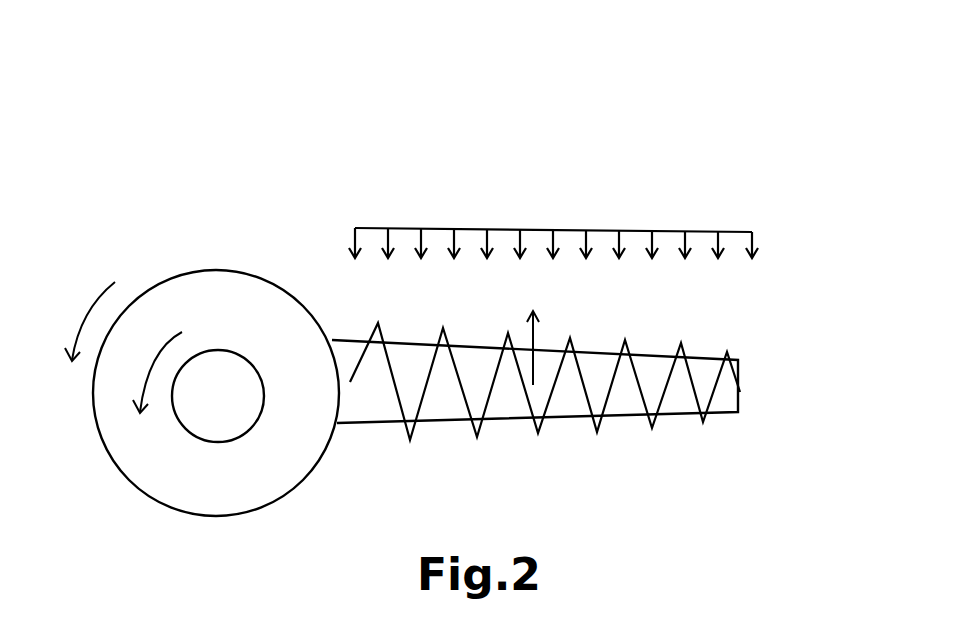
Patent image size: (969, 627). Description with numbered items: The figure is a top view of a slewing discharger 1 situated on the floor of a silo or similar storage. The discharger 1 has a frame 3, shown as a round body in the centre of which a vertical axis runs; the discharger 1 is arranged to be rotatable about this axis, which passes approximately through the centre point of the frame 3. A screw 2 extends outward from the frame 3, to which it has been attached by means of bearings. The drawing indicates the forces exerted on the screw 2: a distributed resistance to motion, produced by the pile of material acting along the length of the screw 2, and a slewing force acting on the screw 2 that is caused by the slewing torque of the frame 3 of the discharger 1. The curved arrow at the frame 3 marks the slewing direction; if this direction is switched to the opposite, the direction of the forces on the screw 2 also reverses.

The slewing discharger 1 is at (393, 250).
The screw 2 is at (723, 393).
The frame 3 is at (175, 487).